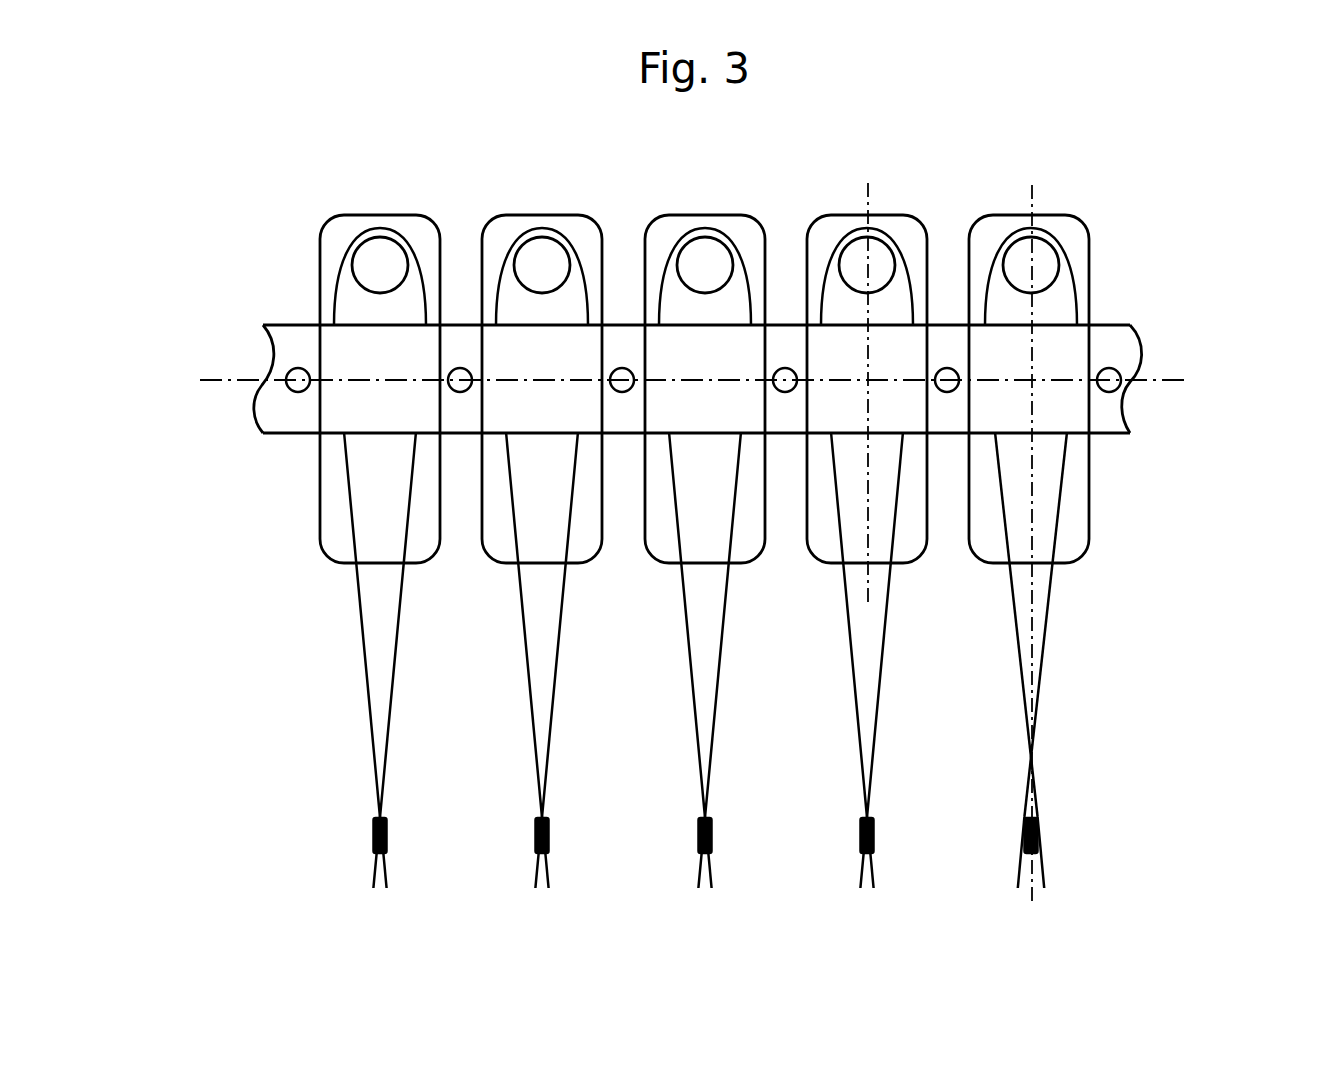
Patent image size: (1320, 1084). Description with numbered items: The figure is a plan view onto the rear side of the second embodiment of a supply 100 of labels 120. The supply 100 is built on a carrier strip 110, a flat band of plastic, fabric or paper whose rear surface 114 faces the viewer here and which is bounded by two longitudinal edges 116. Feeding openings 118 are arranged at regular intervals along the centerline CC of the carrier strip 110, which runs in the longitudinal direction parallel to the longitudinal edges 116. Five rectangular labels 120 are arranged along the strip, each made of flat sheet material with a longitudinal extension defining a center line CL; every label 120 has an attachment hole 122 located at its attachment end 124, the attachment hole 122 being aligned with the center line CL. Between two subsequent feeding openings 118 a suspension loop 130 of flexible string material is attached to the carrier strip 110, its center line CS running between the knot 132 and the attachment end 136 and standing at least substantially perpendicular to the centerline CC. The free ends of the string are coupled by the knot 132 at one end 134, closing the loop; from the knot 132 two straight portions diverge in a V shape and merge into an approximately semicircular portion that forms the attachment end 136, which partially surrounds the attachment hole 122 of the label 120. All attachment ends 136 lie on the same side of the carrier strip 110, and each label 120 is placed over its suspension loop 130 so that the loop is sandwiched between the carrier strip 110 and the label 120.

The supply of labels 100 is at (515, 163).
The carrier strip 110 is at (1197, 445).
The rear surface 114 is at (1087, 412).
The longitudinal edges 116 is at (1122, 328).
The feeding openings 118 is at (946, 392).
The label 120 is at (740, 175).
The attachment hole 122 is at (862, 238).
The attachment end 124 is at (830, 215).
The suspension loop 130 is at (1232, 622).
The knot 132 is at (1038, 836).
The end 134 is at (1038, 870).
The attachment end 136 is at (1057, 235).
The centerline of the carrier strip CC is at (222, 379).
The center line of the label CL is at (870, 198).
The center line of the suspension loop CS is at (1034, 190).